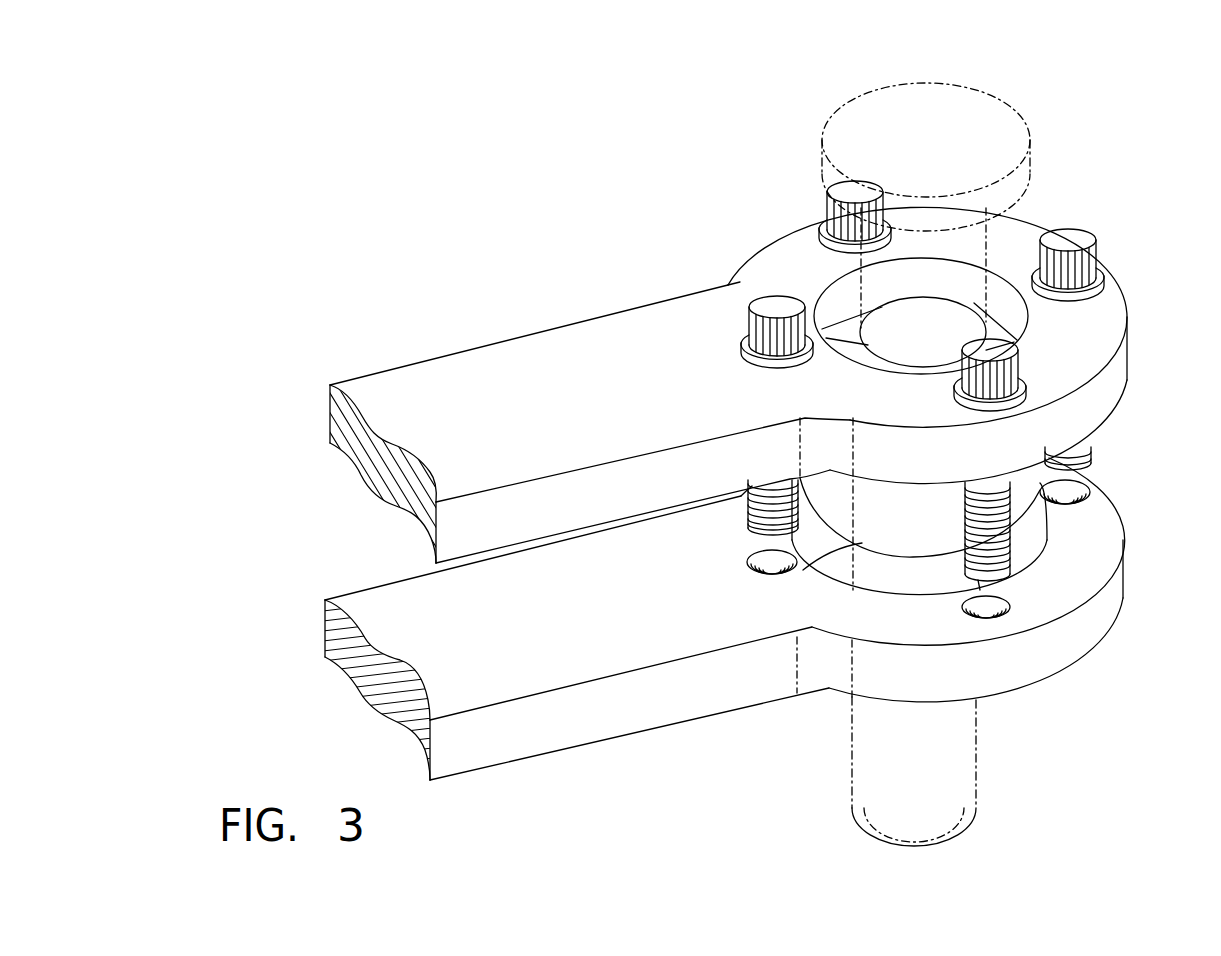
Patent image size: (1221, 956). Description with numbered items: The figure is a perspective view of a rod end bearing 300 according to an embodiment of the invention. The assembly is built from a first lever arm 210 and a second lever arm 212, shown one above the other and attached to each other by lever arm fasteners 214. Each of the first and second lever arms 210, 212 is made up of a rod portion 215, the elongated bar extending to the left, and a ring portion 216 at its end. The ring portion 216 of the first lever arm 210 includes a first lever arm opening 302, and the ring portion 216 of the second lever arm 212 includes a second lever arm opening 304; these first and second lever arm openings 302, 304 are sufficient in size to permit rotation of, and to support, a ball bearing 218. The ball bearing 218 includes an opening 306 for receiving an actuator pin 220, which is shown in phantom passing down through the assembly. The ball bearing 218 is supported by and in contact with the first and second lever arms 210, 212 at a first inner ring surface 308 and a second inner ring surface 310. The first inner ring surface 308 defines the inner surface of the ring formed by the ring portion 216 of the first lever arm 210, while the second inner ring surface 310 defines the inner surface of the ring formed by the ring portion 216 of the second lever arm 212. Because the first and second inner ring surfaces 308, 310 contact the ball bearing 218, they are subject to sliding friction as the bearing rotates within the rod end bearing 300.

The first lever arm 210 is at (1053, 381).
The second lever arm 212 is at (1053, 588).
The lever arm fasteners 214 is at (1080, 237).
The rod portion 215 is at (676, 226).
The ring portion 216 is at (1030, 56).
The ball bearing 218 is at (850, 347).
The actuator pin 220 is at (852, 755).
The rod end bearing 300 is at (643, 753).
The first lever arm opening 302 is at (1015, 332).
The second lever arm opening 304 is at (843, 570).
The opening 306 is at (913, 312).
The first inner ring surface 308 is at (850, 290).
The second inner ring surface 310 is at (803, 533).